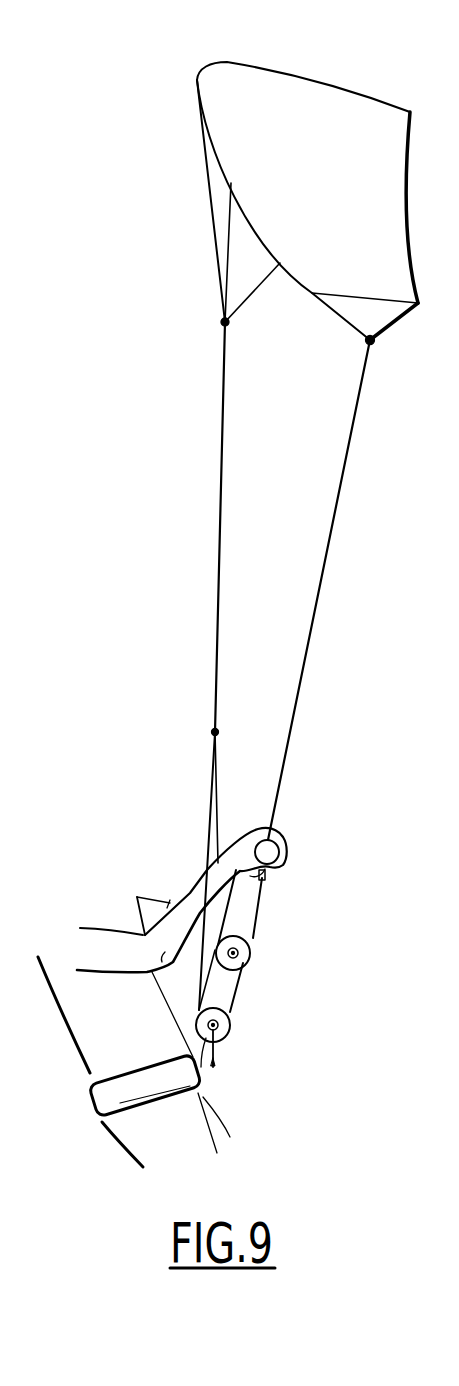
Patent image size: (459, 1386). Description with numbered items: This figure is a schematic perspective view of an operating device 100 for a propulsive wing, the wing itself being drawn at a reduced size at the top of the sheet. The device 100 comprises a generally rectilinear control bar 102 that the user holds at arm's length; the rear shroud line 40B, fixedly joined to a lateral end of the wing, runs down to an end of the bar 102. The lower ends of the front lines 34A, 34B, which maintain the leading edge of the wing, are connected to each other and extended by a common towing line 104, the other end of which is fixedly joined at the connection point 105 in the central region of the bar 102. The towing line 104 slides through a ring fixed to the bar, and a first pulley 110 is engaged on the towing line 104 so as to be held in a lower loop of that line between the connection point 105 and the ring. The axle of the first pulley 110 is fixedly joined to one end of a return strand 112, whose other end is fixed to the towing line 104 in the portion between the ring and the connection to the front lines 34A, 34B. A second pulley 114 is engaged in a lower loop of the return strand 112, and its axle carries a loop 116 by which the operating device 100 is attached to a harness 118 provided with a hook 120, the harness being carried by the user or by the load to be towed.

The front line 34A is at (213, 480).
The front line 34B is at (220, 527).
The rear shroud line 40B is at (350, 448).
The common towing line 104 is at (215, 678).
The control bar 102 is at (272, 852).
The connection point 105 is at (267, 875).
The operating device 100 is at (255, 935).
The first pulley 110 is at (249, 967).
The return strand 112 is at (232, 1000).
The second pulley 114 is at (229, 1030).
The loop 116 is at (216, 1050).
The harness 118 is at (177, 1092).
The hook 120 is at (203, 1058).